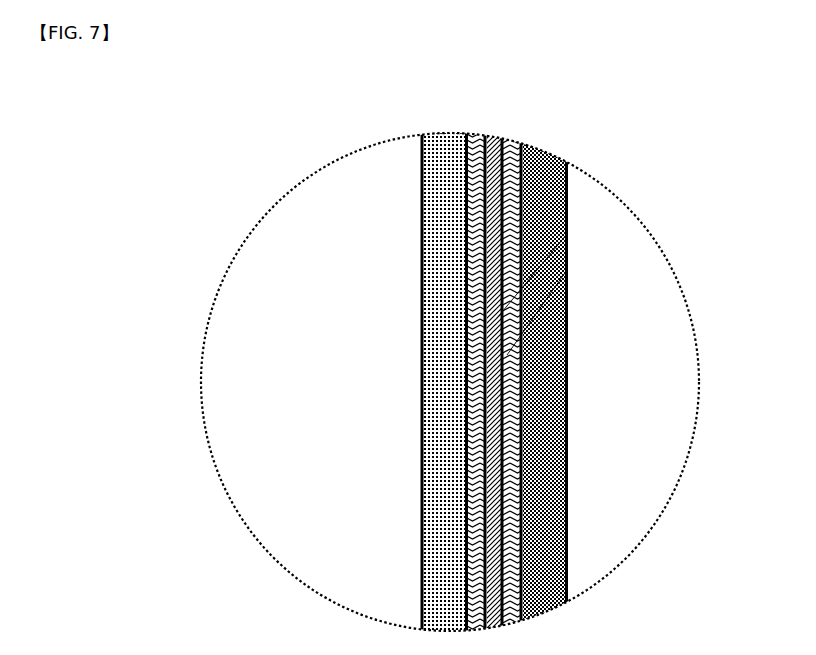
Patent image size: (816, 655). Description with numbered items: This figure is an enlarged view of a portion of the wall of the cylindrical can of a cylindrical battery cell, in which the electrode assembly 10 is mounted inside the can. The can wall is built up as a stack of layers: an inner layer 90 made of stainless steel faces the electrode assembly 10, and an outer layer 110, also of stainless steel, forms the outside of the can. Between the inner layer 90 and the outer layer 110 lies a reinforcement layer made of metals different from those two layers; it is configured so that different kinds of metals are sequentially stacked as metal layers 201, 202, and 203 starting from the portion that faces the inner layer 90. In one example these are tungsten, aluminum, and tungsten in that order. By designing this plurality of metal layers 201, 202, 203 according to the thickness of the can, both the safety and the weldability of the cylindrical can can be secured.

The electrode assembly 10 is at (255, 393).
The inner layer 90 is at (445, 243).
The outer layer 110 is at (567, 170).
The metal layer 201 is at (567, 326).
The metal layer 202 is at (567, 270).
The metal layer 203 is at (567, 234).